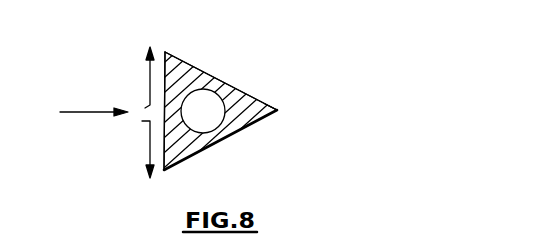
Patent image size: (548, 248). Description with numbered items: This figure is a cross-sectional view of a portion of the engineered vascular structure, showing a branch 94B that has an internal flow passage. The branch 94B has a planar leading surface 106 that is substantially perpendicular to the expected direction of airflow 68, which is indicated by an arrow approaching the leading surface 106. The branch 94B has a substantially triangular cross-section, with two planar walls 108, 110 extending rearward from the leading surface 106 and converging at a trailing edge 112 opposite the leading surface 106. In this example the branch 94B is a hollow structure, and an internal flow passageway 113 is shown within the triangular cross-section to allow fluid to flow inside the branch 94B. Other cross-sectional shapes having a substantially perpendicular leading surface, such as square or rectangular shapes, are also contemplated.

The branch 94B is at (222, 61).
The internal flow passageway 113 is at (207, 112).
The planar wall 108 is at (258, 101).
The planar wall 110 is at (222, 137).
The trailing edge 112 is at (277, 110).
The planar leading surface 106 is at (165, 111).
The expected direction of airflow 68 is at (88, 111).